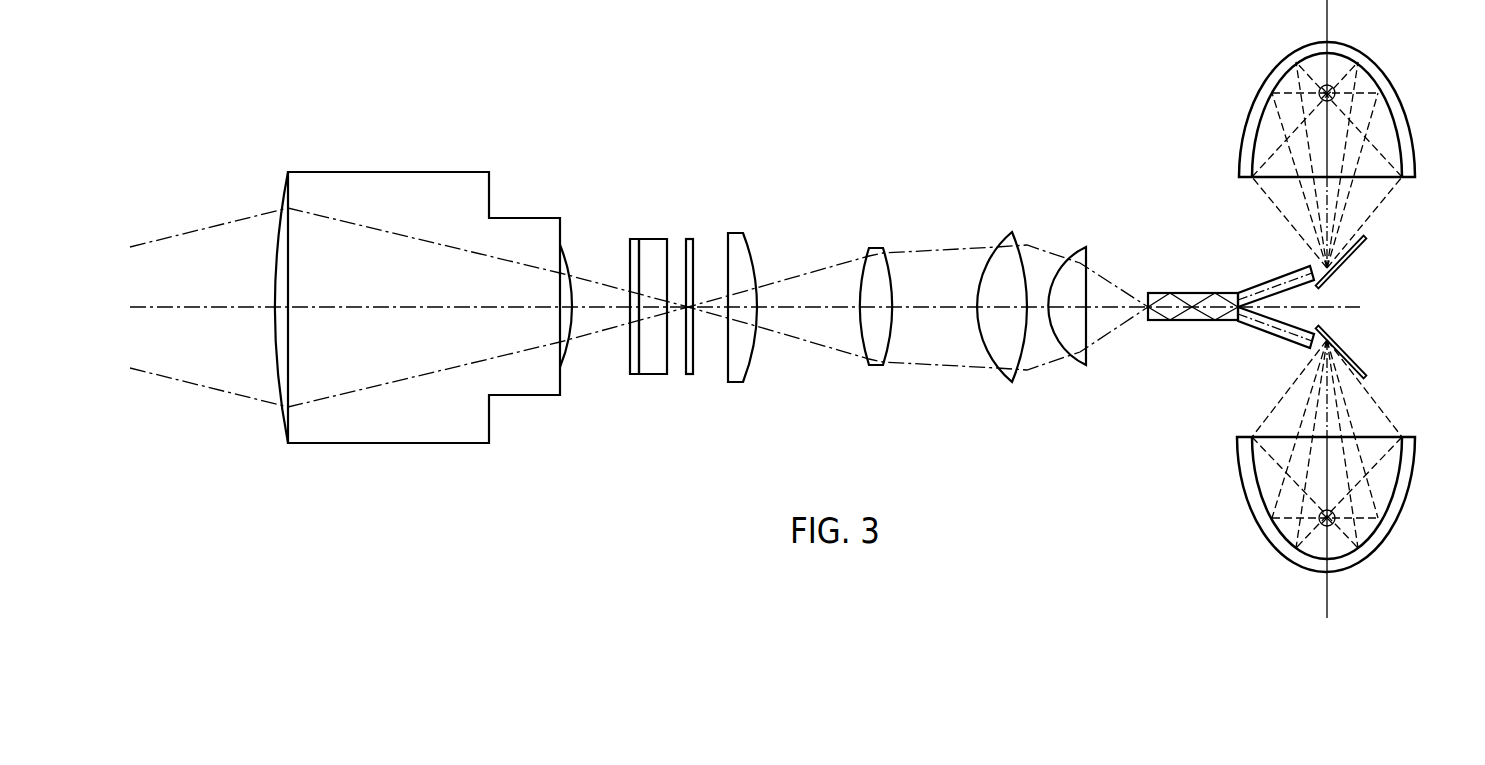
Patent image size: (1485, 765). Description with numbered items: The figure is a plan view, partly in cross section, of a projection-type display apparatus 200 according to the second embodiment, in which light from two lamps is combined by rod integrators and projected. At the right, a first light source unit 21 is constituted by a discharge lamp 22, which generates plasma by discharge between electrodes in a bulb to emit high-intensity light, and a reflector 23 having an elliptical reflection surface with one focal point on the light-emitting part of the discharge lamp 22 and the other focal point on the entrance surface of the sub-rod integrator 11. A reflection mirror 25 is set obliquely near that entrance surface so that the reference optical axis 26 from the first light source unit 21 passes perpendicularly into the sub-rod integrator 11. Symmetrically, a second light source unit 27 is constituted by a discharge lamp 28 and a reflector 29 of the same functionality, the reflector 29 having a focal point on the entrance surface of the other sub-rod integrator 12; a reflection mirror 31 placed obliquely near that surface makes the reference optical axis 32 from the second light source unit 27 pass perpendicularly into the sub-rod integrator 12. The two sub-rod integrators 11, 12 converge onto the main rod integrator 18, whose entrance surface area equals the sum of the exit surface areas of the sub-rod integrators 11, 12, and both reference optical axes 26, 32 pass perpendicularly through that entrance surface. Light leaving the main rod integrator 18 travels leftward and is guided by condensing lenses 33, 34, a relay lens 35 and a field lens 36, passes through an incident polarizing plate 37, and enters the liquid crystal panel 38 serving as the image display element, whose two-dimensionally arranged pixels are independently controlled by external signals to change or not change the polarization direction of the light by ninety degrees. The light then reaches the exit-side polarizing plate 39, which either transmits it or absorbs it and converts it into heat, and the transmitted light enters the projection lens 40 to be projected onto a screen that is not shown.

The projection lens 40 is at (410, 172).
The exit-side polarizing plate 39 is at (635, 239).
The liquid crystal panel 38 is at (657, 239).
The incident polarizing plate 37 is at (691, 239).
The field lens 36 is at (740, 233).
The relay lens 35 is at (877, 247).
The condensing lens 34 is at (1012, 232).
The condensing lens 33 is at (1080, 247).
The projection-type display apparatus 200 is at (927, 431).
The main rod integrator 18 is at (1190, 293).
The sub-rod integrator 11 is at (1258, 283).
The sub-rod integrator 12 is at (1262, 330).
The reflection mirror 25 is at (1348, 266).
The reflection mirror 31 is at (1348, 347).
The first light source unit 21 is at (1424, 92).
The reflector 23 is at (1260, 97).
The discharge lamp 22 is at (1320, 85).
The reference optical axis 26 is at (1330, 15).
The second light source unit 27 is at (1424, 540).
The reflector 29 is at (1257, 520).
The discharge lamp 28 is at (1320, 528).
The reference optical axis 32 is at (1330, 594).